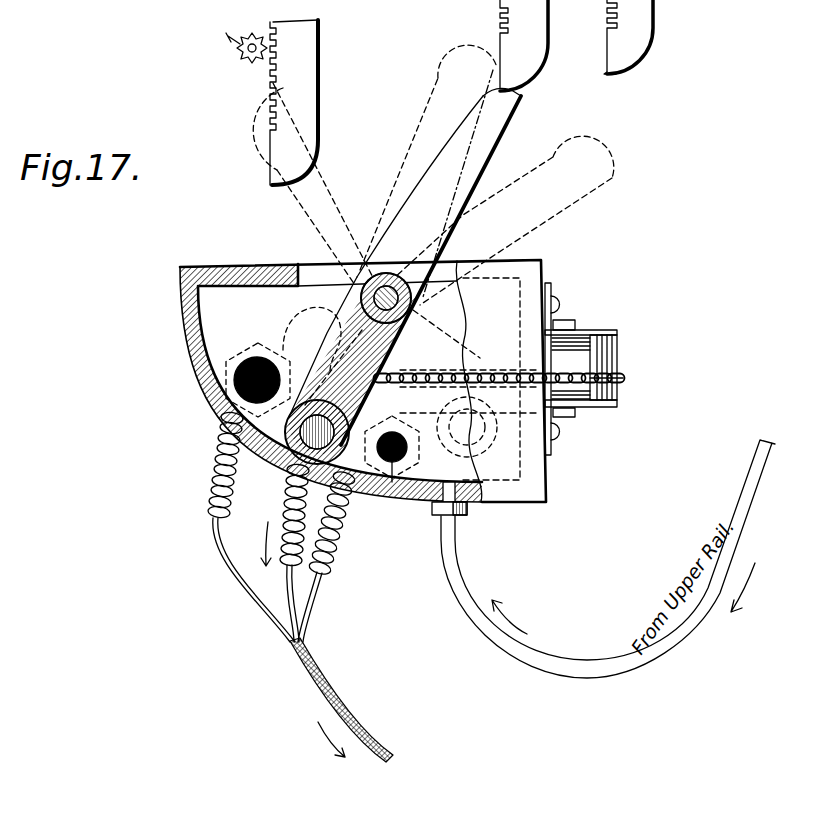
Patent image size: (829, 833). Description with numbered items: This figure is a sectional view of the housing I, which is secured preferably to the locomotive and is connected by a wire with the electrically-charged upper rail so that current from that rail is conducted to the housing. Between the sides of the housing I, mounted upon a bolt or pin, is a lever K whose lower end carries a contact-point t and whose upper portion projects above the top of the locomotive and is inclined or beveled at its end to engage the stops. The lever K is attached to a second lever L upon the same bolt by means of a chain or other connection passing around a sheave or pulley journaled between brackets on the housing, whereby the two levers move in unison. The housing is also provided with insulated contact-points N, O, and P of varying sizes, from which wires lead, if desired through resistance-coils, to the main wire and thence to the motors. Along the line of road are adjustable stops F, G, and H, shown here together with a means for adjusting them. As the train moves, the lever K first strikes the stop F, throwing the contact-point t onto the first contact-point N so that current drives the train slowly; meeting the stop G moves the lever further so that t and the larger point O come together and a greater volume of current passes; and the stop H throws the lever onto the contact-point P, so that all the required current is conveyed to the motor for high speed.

The stop H is at (310, 122).
The stop G is at (533, 65).
The stop F is at (627, 58).
The lever K is at (398, 234).
The second lever L is at (404, 177).
The housing I is at (175, 322).
The contact-point P is at (233, 382).
The contact-point t is at (307, 405).
The contact-point O is at (303, 586).
The contact-point N is at (340, 547).